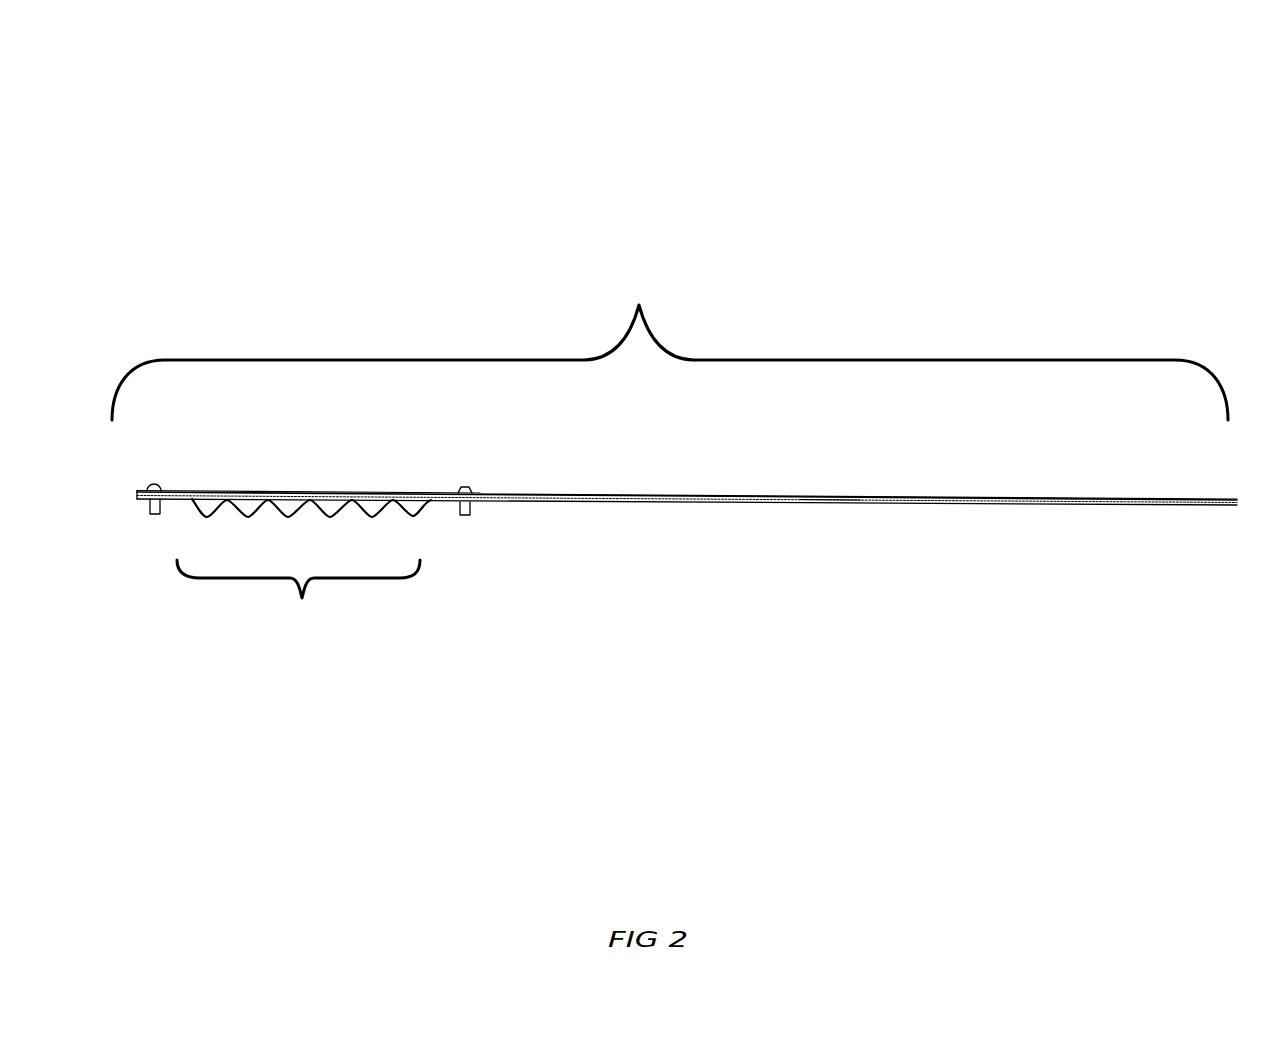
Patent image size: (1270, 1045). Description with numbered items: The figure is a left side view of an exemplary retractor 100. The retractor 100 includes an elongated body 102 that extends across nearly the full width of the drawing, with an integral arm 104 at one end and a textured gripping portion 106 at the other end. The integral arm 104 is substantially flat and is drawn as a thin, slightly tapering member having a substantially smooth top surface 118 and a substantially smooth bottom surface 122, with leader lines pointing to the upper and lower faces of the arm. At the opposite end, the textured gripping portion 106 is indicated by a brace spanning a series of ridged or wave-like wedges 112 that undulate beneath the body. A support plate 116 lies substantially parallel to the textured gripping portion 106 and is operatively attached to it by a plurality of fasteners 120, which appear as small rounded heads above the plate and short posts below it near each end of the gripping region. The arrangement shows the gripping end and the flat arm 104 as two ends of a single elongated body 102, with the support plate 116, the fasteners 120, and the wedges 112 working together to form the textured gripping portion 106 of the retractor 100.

The retractor 100 is at (1174, 83).
The elongated body 102 is at (670, 331).
The integral arm 104 is at (1190, 505).
The textured gripping portion 106 is at (298, 570).
The ridged or wave-like wedges 112 is at (413, 507).
The support plate 116 is at (282, 492).
The top surface 118 is at (670, 498).
The fasteners 120 is at (152, 503).
The bottom surface 122 is at (828, 498).